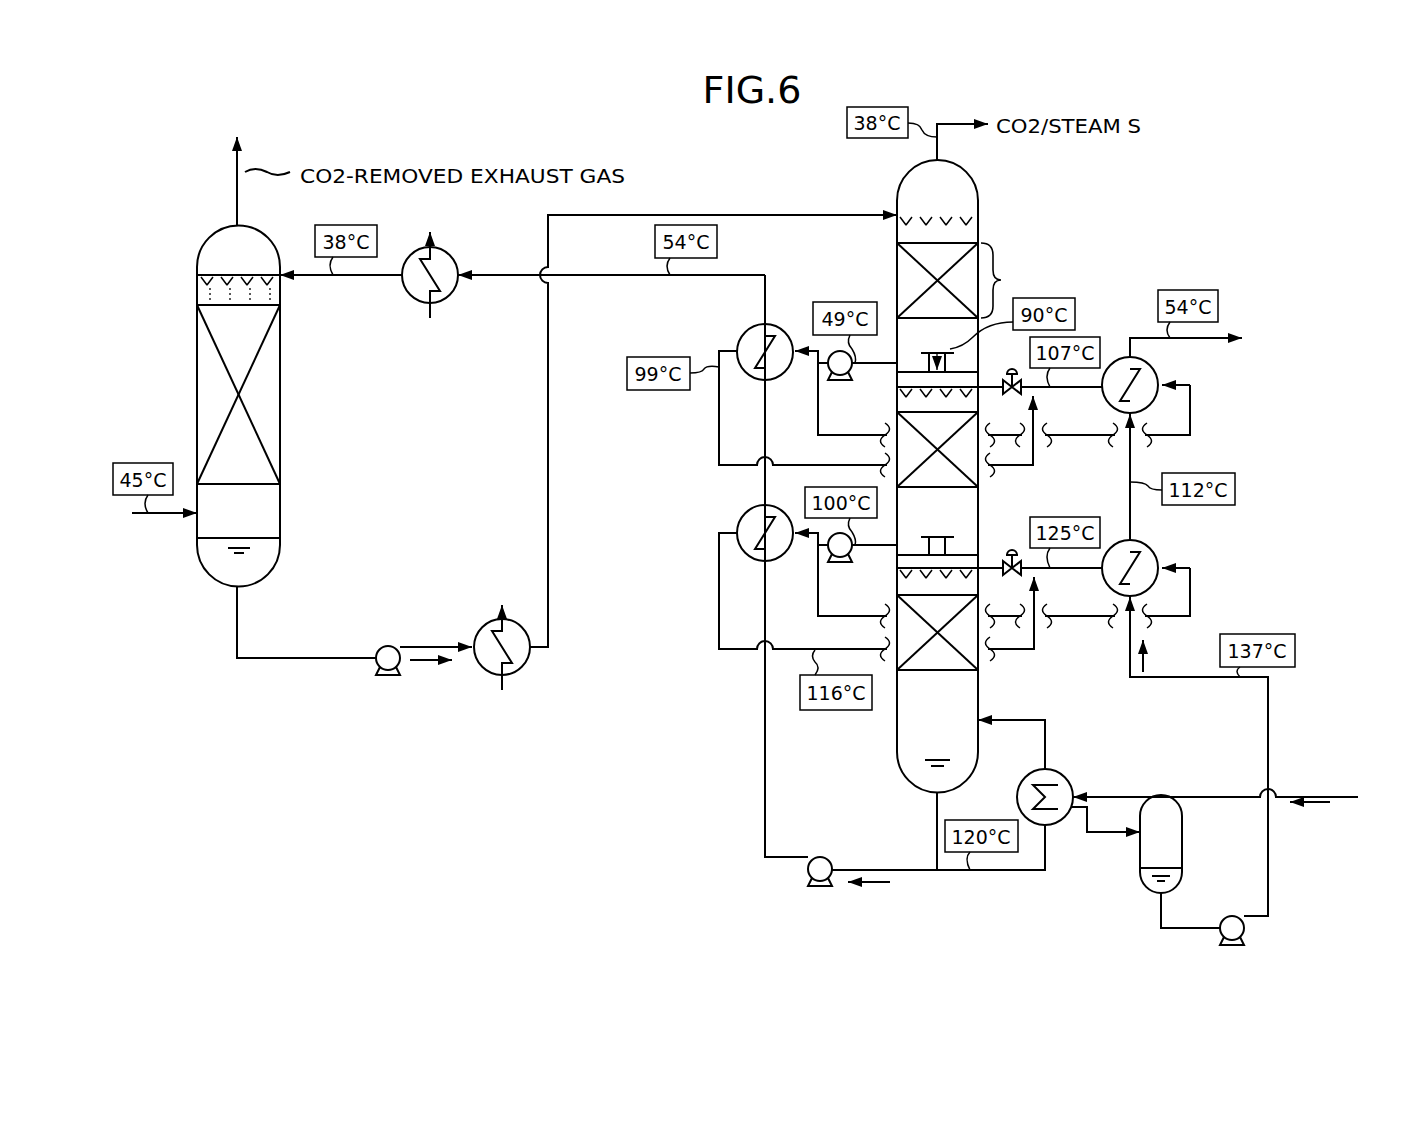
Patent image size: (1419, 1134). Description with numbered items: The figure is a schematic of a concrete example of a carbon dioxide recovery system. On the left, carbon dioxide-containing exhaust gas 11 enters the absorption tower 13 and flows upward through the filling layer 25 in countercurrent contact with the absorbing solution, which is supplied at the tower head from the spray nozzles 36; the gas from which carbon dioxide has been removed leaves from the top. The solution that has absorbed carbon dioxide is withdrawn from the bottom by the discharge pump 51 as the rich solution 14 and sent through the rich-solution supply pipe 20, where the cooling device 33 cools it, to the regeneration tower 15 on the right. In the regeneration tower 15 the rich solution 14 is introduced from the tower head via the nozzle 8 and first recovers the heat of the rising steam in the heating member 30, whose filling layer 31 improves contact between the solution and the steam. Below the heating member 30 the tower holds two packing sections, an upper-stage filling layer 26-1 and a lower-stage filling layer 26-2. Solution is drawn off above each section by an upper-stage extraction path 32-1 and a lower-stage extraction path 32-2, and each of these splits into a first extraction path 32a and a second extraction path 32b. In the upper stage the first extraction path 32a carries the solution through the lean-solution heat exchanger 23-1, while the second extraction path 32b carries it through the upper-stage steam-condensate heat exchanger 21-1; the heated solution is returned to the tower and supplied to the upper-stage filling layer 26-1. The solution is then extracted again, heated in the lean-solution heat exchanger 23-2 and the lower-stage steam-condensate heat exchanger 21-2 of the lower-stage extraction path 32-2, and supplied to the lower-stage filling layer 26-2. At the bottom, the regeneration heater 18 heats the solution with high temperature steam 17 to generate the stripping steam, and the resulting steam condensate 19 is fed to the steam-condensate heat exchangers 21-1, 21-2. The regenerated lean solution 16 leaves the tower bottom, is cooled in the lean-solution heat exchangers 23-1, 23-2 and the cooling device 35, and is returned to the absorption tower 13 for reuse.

The nozzle 8 is at (975, 216).
The CO2-containing gas 11 is at (143, 513).
The absorption tower 13 is at (353, 406).
The rich solution 14 is at (428, 668).
The regeneration tower 15 is at (1051, 476).
The lean solution 16 is at (868, 882).
The high temperature steam 17 is at (1325, 803).
The regeneration heater 18 is at (1065, 775).
The steam condensate 19 is at (1150, 654).
The rich-solution supply pipe 20 is at (548, 466).
The upper-stage steam-condensate heat exchanger 21-1 is at (1160, 368).
The lower-stage steam-condensate heat exchanger 21-2 is at (1160, 551).
The lean-solution heat exchanger 23-1 is at (745, 332).
The lean-solution heat exchanger 23-2 is at (745, 514).
The filling layer 25 is at (281, 340).
The upper-stage filling layer 26-1 is at (955, 487).
The lower-stage filling layer 26-2 is at (955, 673).
The heating member 30 is at (1045, 280).
The filling layer 31 is at (905, 262).
The upper-stage extraction path 32-1 is at (884, 408).
The lower-stage extraction path 32-2 is at (719, 602).
The first extraction path 32a is at (719, 420).
The second extraction path 32b is at (818, 424).
The cooling device 33 is at (521, 667).
The cooling device 35 is at (450, 255).
The nozzle 36 is at (267, 285).
The discharge pump 51 is at (377, 648).